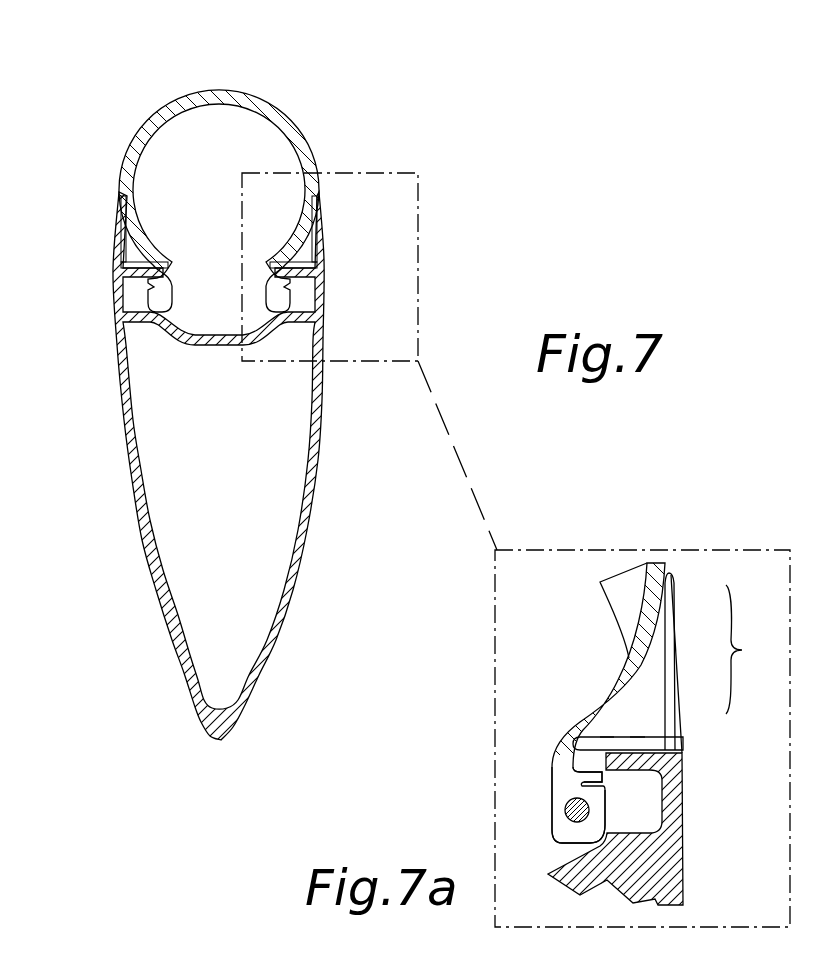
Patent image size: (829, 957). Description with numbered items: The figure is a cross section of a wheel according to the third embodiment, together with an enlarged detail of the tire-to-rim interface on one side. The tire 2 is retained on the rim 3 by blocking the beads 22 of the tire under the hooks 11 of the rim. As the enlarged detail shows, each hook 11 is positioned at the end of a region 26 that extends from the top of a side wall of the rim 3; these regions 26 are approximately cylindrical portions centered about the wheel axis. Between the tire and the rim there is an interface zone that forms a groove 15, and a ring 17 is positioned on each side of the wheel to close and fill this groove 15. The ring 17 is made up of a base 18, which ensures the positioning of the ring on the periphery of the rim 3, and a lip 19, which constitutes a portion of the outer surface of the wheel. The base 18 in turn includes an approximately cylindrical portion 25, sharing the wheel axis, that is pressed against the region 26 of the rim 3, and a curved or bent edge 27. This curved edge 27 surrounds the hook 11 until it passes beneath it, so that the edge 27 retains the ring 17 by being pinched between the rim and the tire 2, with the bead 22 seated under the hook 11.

In FIG. 7, the tire 2 is at (171, 99).
In FIG. 7, the rim 3 is at (122, 453).
In FIG. 7A, the rim 3 is at (683, 853).
In FIG. 7A, the hook 11 is at (585, 762).
In FIG. 7A, the groove 15 is at (652, 685).
In FIG. 7, the ring 17 is at (113, 247).
In FIG. 7A, the ring 17 is at (754, 649).
In FIG. 7A, the base 18 is at (652, 737).
In FIG. 7A, the lip 19 is at (676, 638).
In FIG. 7A, the bead 22 is at (568, 832).
In FIG. 7A, the cylindrical portion 25 is at (610, 740).
In FIG. 7A, the region 26 is at (638, 747).
In FIG. 7A, the curved edge 27 is at (572, 762).